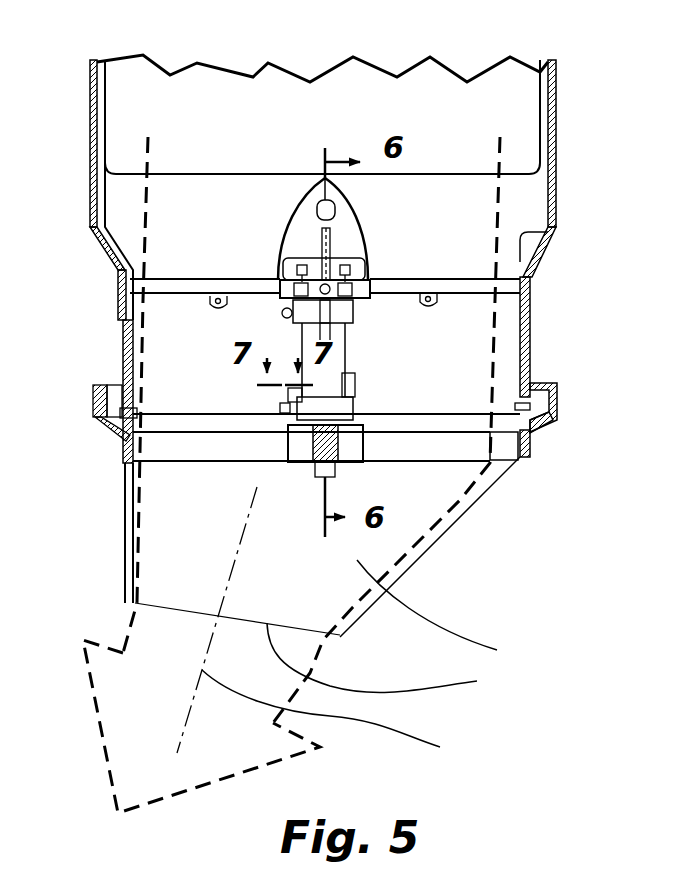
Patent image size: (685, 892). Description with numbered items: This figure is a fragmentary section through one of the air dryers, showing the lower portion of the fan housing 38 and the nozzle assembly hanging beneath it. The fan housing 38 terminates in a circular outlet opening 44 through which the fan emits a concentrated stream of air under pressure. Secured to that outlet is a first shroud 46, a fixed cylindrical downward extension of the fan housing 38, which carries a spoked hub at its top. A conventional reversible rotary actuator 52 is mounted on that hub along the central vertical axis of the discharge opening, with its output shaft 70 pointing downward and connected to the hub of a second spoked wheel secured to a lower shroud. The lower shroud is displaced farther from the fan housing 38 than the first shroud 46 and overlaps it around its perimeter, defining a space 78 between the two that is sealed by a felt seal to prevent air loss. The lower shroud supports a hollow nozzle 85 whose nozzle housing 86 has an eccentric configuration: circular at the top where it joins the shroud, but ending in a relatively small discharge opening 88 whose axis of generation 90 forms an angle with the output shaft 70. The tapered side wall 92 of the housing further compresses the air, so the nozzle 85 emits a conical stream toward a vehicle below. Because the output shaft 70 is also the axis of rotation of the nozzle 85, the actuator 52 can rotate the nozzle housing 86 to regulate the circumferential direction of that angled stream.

The fan housing 38 is at (555, 135).
The outlet opening 44 is at (553, 233).
The first shroud 46 is at (523, 337).
The rotary actuator 52 is at (370, 342).
The output shaft 70 is at (363, 457).
The space 78 is at (563, 366).
The nozzle 85 is at (455, 563).
The nozzle housing 86 is at (448, 616).
The discharge opening 88 is at (392, 663).
The axis of generation 90 is at (341, 718).
The tapered side wall 92 is at (500, 483).